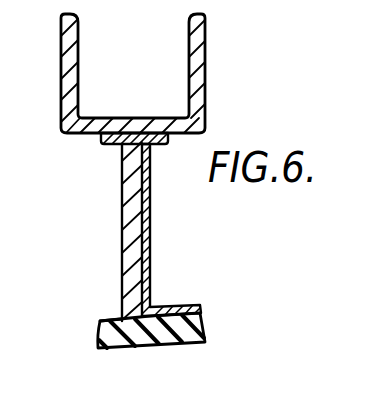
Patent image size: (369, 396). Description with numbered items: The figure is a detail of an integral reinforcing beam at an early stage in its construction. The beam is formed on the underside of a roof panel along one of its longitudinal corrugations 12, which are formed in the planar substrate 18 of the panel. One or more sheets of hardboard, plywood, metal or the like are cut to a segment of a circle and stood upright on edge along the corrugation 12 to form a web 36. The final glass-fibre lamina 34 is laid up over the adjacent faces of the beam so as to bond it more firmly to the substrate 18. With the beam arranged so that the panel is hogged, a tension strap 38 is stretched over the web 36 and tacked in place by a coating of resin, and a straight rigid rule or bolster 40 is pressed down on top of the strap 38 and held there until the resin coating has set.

The bolster 40 is at (61, 38).
The tension strap 38 is at (107, 143).
The web 36 is at (122, 212).
The glass-fibre lamina 34 is at (150, 246).
The substrate 18 is at (104, 320).
The corrugation 12 is at (166, 350).